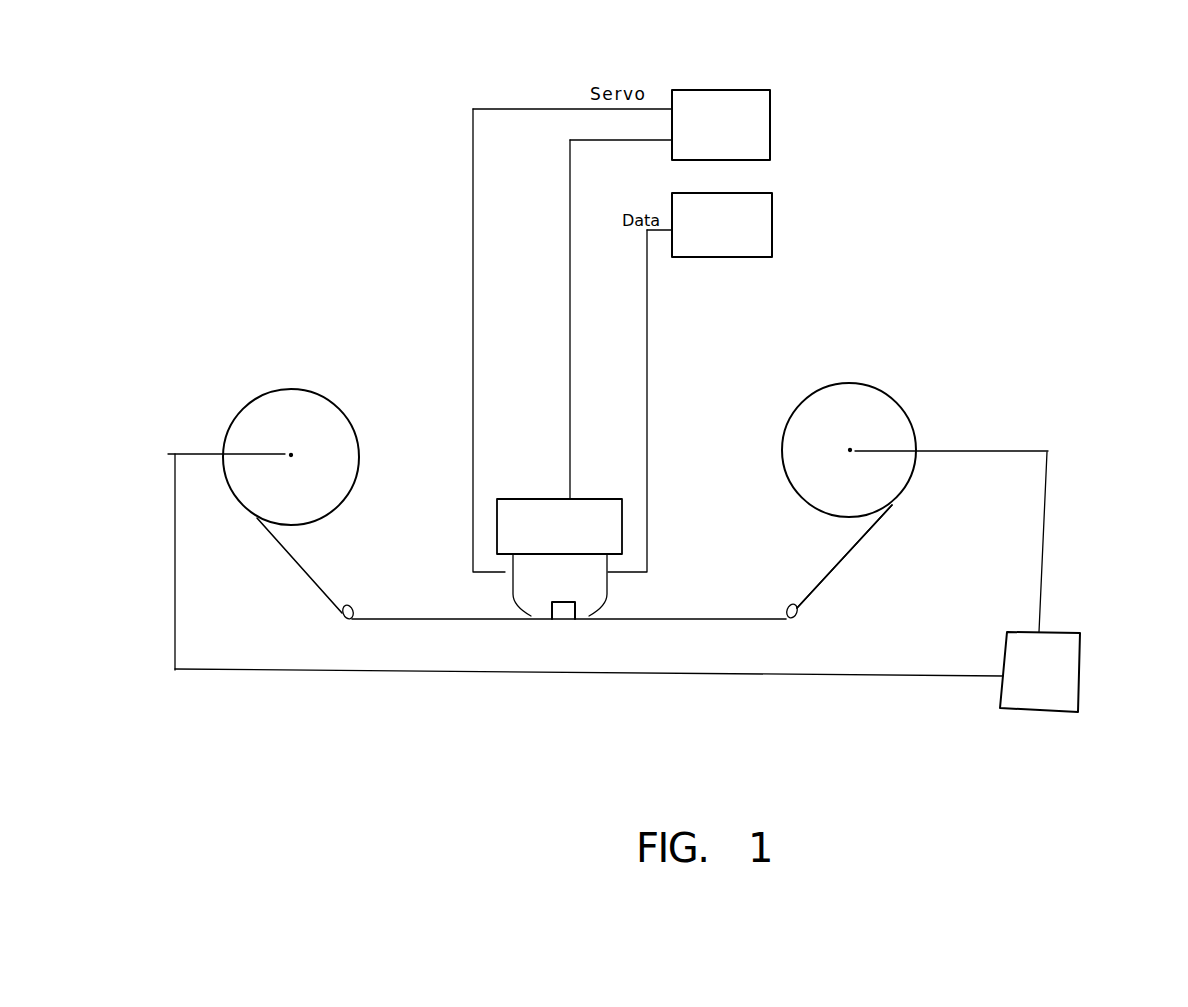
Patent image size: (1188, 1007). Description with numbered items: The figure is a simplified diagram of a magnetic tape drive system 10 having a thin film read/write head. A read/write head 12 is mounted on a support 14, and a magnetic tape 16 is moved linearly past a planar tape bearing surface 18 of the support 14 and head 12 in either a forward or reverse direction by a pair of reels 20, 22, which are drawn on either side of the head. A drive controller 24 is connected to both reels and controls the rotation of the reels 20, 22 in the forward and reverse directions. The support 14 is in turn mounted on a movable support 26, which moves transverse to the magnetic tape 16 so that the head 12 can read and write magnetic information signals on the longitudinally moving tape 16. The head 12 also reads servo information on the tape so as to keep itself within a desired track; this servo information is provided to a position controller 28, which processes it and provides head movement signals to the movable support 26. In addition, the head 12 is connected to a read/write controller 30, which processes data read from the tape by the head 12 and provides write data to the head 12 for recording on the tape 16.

The magnetic tape drive system 10 is at (1088, 64).
The read/write head 12 is at (550, 620).
The support 14 is at (609, 597).
The magnetic tape 16 is at (833, 573).
The tape bearing surface 18 is at (577, 622).
The reel 20 is at (258, 396).
The reel 22 is at (910, 411).
The drive controller 24 is at (1080, 682).
The movable support 26 is at (525, 497).
The position controller 28 is at (771, 116).
The read/write controller 30 is at (773, 213).